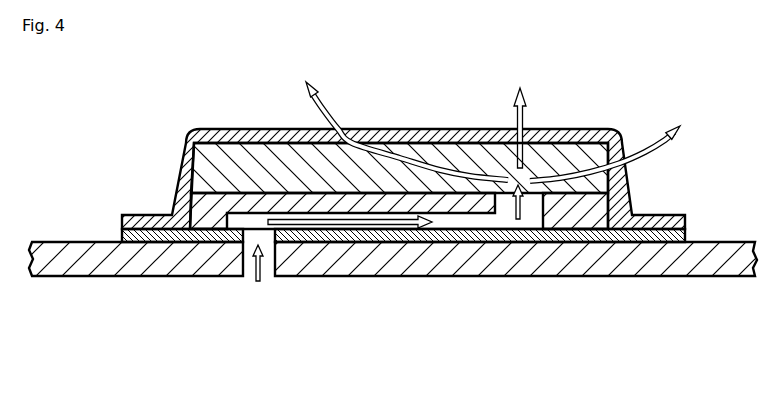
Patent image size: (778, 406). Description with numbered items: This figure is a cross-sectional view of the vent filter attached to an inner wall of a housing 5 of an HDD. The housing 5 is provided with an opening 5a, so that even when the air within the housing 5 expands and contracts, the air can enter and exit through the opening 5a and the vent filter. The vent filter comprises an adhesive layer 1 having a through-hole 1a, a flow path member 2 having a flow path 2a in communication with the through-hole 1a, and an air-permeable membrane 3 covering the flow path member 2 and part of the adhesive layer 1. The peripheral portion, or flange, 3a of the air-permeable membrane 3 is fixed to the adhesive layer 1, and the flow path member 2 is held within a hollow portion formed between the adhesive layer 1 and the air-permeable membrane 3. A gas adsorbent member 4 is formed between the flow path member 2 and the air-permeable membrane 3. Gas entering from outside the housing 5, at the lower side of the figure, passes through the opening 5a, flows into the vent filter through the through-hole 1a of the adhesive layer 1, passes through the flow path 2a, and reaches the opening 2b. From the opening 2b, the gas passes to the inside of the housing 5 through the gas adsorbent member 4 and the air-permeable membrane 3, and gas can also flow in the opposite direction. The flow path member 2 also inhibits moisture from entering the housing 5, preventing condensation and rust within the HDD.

The adhesive layer 1 is at (150, 232).
The through-hole 1a is at (265, 234).
The flow path member 2 is at (209, 200).
The flow path 2a is at (441, 224).
The opening 2b is at (533, 208).
The air-permeable membrane 3 is at (483, 138).
The peripheral portion (flange) 3a is at (667, 216).
The gas adsorbent member 4 is at (233, 162).
The housing 5 is at (78, 268).
The opening 5a is at (250, 279).